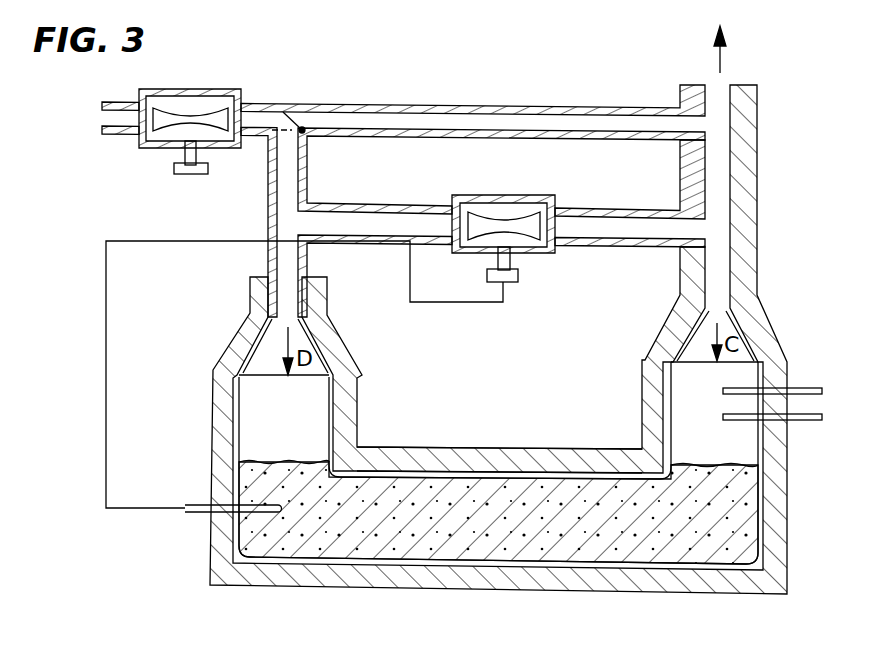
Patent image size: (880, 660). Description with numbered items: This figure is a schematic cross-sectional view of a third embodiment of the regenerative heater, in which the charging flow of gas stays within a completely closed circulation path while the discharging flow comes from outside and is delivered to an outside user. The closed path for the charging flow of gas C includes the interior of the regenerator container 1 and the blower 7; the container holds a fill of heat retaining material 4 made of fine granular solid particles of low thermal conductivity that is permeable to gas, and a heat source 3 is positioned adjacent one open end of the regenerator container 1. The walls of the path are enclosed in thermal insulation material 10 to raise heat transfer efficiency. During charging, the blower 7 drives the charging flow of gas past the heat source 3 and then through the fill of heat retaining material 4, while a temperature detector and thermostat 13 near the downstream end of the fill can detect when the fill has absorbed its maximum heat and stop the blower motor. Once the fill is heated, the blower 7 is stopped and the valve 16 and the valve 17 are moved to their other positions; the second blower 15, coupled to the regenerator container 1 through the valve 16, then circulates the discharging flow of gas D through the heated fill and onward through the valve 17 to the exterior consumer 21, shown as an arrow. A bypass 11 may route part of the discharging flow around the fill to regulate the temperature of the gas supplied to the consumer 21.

The regenerator container 1 is at (429, 471).
The heat source 3 is at (810, 388).
The fill of heat retaining material 4 is at (488, 495).
The blower 7 is at (512, 225).
The thermal insulation material 10 is at (591, 460).
The bypass 11 is at (455, 104).
The temperature detector and thermostat 13 is at (190, 506).
The second blower 15 is at (186, 117).
The valve 16 is at (298, 115).
The valve 17 is at (706, 221).
The consumer 21 is at (722, 58).